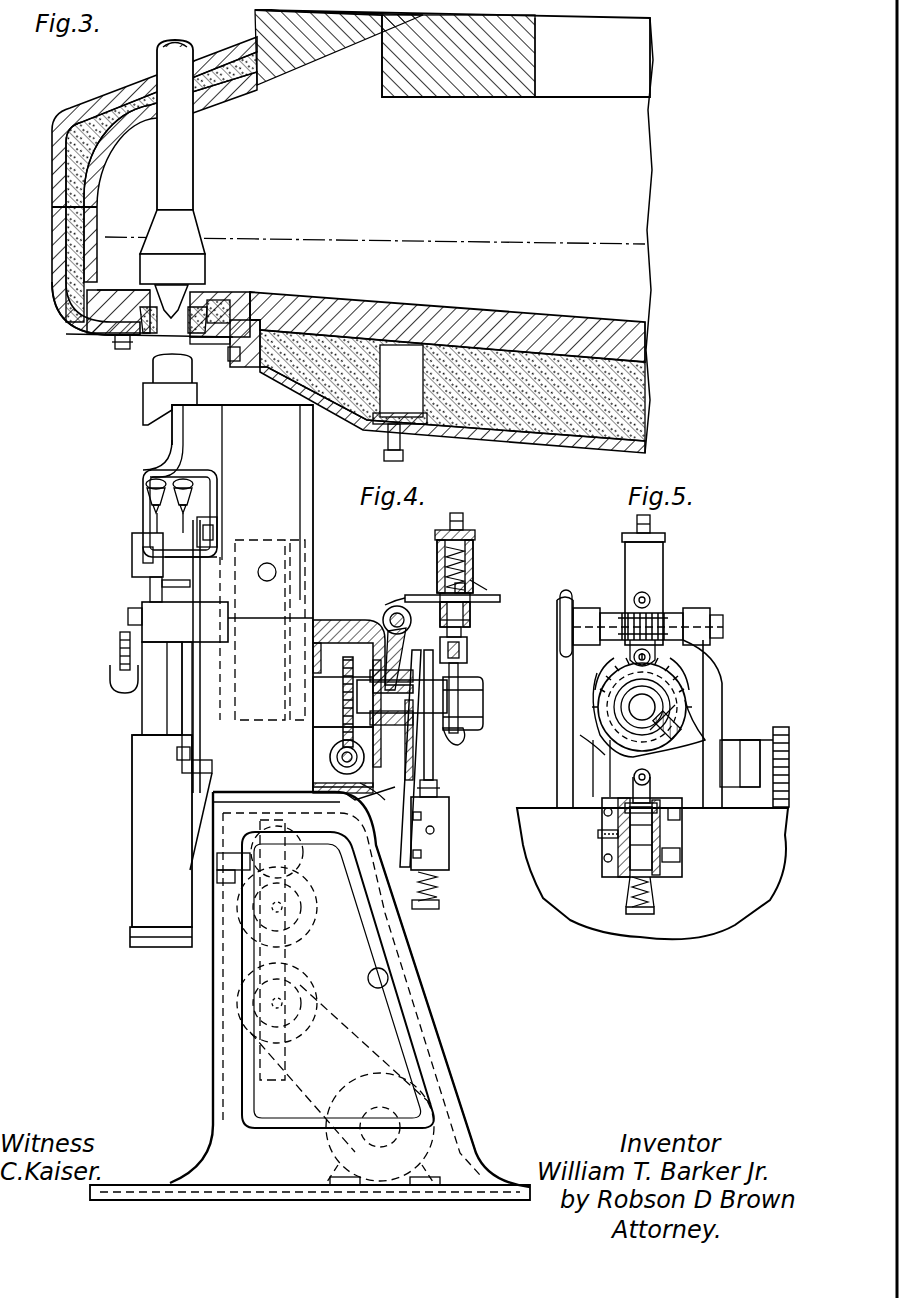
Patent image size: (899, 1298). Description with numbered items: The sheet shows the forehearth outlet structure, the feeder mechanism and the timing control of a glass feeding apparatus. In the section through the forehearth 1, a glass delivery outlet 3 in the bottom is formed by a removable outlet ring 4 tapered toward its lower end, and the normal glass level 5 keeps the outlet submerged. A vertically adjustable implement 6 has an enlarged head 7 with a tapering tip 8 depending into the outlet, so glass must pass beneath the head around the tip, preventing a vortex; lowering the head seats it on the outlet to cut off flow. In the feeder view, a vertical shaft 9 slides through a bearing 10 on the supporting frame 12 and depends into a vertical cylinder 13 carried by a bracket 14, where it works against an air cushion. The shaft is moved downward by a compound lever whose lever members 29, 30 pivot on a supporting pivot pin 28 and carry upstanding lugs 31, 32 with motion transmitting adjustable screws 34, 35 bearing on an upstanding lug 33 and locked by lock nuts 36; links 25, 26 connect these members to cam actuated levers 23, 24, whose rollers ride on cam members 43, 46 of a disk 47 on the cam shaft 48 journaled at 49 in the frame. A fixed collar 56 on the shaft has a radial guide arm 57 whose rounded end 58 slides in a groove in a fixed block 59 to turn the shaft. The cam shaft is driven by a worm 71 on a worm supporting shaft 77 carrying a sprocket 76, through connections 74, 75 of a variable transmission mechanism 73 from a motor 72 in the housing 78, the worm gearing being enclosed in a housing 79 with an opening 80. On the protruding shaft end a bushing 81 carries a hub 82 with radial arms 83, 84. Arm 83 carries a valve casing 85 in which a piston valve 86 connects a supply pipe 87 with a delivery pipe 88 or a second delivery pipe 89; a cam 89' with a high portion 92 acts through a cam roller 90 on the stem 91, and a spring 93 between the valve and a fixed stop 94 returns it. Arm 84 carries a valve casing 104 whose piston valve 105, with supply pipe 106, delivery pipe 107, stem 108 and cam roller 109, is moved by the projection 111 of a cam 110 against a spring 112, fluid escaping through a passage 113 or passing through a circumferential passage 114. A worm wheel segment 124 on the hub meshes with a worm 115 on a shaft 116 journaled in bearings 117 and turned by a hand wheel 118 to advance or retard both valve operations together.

In FIG. 3, the forehearth 1 is at (485, 97).
In FIG. 3, the glass delivery outlet 3 is at (93, 330).
In FIG. 3, the removable outlet ring 4 is at (120, 350).
In FIG. 3, the normal glass level 5 is at (107, 236).
In FIG. 3, the vertically adjustable implement 6 is at (183, 197).
In FIG. 3, the enlarged head 7 is at (140, 268).
In FIG. 3, the tapering tip 8 is at (163, 288).
In FIG. 3, the vertical shaft 9 is at (155, 368).
In FIG. 4, the bearing 10 is at (344, 662).
In FIG. 4, the supporting frame 12 is at (312, 506).
In FIG. 4, the vertical cylinder 13 is at (138, 768).
In FIG. 4, the bracket 14 is at (180, 775).
In FIG. 4, the cam actuated lever 23 is at (120, 647).
In FIG. 4, the cam actuated lever 24 is at (190, 778).
In FIG. 4, the link 25 is at (160, 583).
In FIG. 4, the link 26 is at (218, 533).
In FIG. 4, the supporting pivot pin 28 is at (123, 536).
In FIG. 4, the lever member 29 is at (147, 523).
In FIG. 4, the lever member 30 is at (192, 513).
In FIG. 4, the upstanding lug 31 is at (150, 490).
In FIG. 4, the upstanding lug 32 is at (178, 490).
In FIG. 4, the upstanding lug 33 is at (183, 485).
In FIG. 4, the motion transmitting adjustable screw 34 is at (152, 505).
In FIG. 4, the motion transmitting adjustable screw 35 is at (160, 485).
In FIG. 4, the lock nuts 36 is at (207, 490).
In FIG. 4, the cam member 43 is at (160, 700).
In FIG. 4, the cam member 46 is at (127, 690).
In FIG. 4, the disk 47 is at (207, 703).
In FIG. 4, the cam shaft 48 is at (483, 700).
In FIG. 5, the cam shaft 48 is at (700, 727).
In FIG. 4, the journal 49 is at (180, 717).
In FIG. 4, the fixed collar 56 is at (163, 587).
In FIG. 4, the radial guide arm 57 is at (212, 568).
In FIG. 4, the rounded outer end 58 is at (267, 563).
In FIG. 4, the fixed block 59 is at (283, 600).
In FIG. 4, the worm 71 is at (371, 802).
In FIG. 4, the motor 72 is at (380, 1103).
In FIG. 4, the variable transmission mechanism 73 is at (305, 943).
In FIG. 4, the motion transmitting connection 74 is at (313, 1020).
In FIG. 4, the motion transmitting connection 75 is at (310, 770).
In FIG. 5, the motion transmitting connection 75 is at (775, 740).
In FIG. 4, the sprocket 76 is at (315, 796).
In FIG. 4, the worm supporting shaft 77 is at (333, 747).
In FIG. 5, the worm supporting shaft 77 is at (788, 727).
In FIG. 4, the housing 78 is at (412, 955).
In FIG. 4, the housing 79 is at (333, 635).
In FIG. 4, the opening 80 is at (380, 697).
In FIG. 4, the bushing 81 is at (462, 712).
In FIG. 4, the hub 82 is at (382, 655).
In FIG. 4, the radial arm 83 is at (433, 745).
In FIG. 4, the radial arm 84 is at (390, 605).
In FIG. 4, the valve casing 85 is at (443, 813).
In FIG. 5, the valve casing 85 is at (613, 870).
In FIG. 5, the piston valve 86 is at (635, 840).
In FIG. 5, the fluid pressure supply pipe 87 is at (600, 833).
In FIG. 5, the delivery pipe 88 is at (672, 852).
In FIG. 5, the second delivery pipe 89 is at (693, 830).
In FIG. 4, the cam 89' is at (475, 743).
In FIG. 5, the cam 89' is at (556, 740).
In FIG. 5, the cam roller 90 is at (632, 777).
In FIG. 5, the stem 91 is at (632, 790).
In FIG. 5, the high portion 92 is at (667, 762).
In FIG. 4, the spring 93 is at (440, 888).
In FIG. 5, the spring 93 is at (647, 890).
In FIG. 5, the fixed stop 94 is at (647, 909).
In FIG. 4, the valve casing 104 is at (473, 573).
In FIG. 5, the valve casing 104 is at (663, 543).
In FIG. 4, the piston valve 105 is at (487, 605).
In FIG. 4, the pressure fluid supply pipe 106 is at (415, 598).
In FIG. 4, the pressure fluid delivery pipe 107 is at (487, 590).
In FIG. 4, the stem 108 is at (467, 632).
In FIG. 4, the cam roller 109 is at (467, 650).
In FIG. 5, the cam 110 is at (643, 707).
In FIG. 5, the projection 111 is at (607, 665).
In FIG. 4, the spring 112 is at (473, 550).
In FIG. 4, the passage 113 is at (490, 578).
In FIG. 4, the circumferentially extending passage 114 is at (480, 617).
In FIG. 5, the worm 115 is at (655, 615).
In FIG. 5, the shaft 116 is at (610, 620).
In FIG. 5, the bearings 117 is at (587, 610).
In FIG. 5, the hand wheel 118 is at (577, 610).
In FIG. 5, the worm wheel segment 124 is at (657, 700).